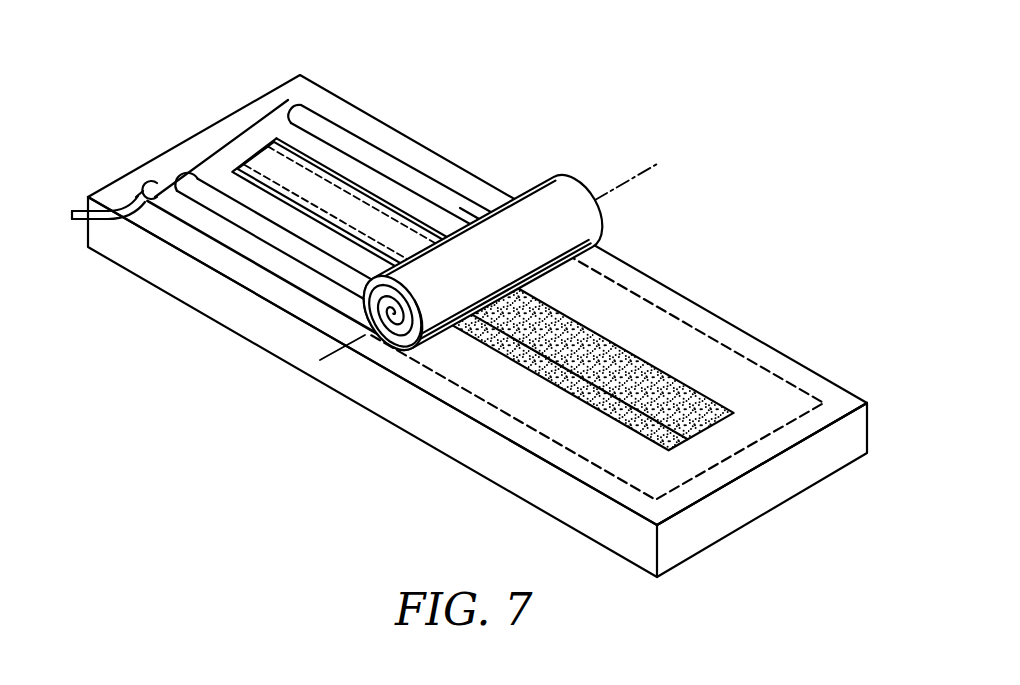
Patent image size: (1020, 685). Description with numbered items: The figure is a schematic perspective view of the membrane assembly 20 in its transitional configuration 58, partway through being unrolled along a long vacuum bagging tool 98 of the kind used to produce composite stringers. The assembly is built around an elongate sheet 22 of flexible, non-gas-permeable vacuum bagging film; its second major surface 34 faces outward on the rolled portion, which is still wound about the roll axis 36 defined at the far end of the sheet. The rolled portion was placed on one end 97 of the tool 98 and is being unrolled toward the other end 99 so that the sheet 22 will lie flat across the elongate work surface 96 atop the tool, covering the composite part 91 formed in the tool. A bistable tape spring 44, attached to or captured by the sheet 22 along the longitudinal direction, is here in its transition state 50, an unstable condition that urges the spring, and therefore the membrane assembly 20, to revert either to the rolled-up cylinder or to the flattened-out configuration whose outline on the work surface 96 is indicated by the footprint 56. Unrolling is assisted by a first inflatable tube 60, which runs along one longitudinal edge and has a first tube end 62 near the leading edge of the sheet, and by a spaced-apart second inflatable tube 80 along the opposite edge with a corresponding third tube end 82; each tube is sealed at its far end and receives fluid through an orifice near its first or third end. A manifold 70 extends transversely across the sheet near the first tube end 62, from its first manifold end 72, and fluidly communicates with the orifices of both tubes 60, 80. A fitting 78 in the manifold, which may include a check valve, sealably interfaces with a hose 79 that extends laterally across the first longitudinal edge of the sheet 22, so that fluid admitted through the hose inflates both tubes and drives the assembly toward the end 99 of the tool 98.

The membrane assembly 20 is at (464, 293).
The transition state 50 is at (464, 293).
The transitional configuration 58 is at (729, 138).
The elongate sheet 22 is at (477, 231).
The second major surface 34 is at (522, 223).
The roll axis 36 is at (625, 185).
The bistable tape spring 44 is at (289, 172).
The footprint 56 is at (740, 353).
The first inflatable tube 60 is at (292, 284).
The first tube end 62 is at (193, 193).
The manifold 70 is at (190, 160).
The first manifold end 72 is at (152, 185).
The fitting 78 is at (135, 192).
The hose 79 is at (80, 210).
The second inflatable tube 80 is at (467, 210).
The third tube end 82 is at (308, 100).
The composite part 91 is at (582, 336).
The elongate work surface 96 is at (532, 402).
The one end 97 is at (424, 138).
The vacuum bagging tool 98 is at (790, 474).
The other end 99 is at (720, 477).